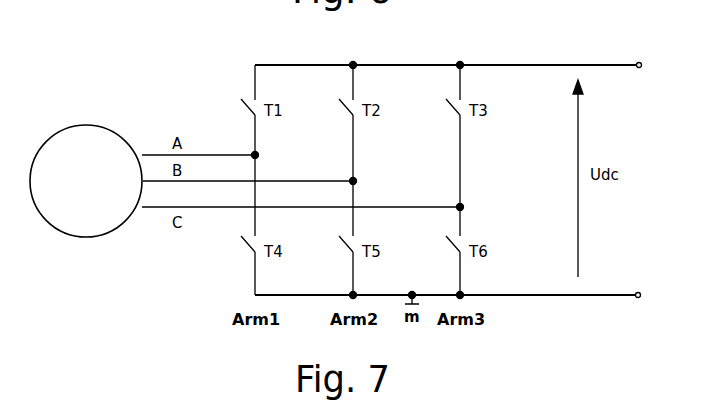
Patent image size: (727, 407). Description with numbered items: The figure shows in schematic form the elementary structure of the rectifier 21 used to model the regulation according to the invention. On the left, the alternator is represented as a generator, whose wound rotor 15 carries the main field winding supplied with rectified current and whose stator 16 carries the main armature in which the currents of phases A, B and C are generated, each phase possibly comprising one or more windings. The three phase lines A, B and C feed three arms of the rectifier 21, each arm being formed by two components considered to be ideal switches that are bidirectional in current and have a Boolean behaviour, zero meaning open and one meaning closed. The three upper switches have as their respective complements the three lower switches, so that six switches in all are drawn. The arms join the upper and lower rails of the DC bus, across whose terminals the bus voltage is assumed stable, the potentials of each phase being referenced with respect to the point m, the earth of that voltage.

The wound rotor 15 is at (86, 140).
The stator 16 is at (86, 124).
The rectifier 21 is at (478, 64).